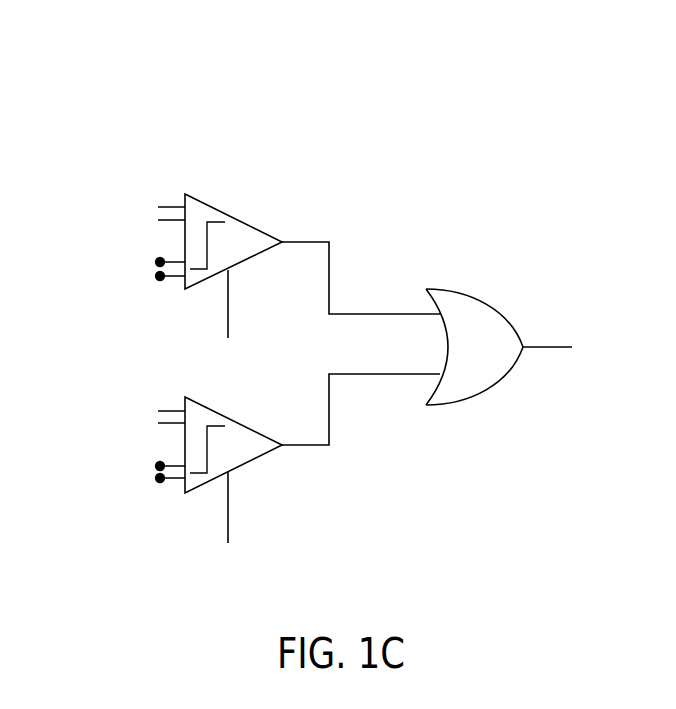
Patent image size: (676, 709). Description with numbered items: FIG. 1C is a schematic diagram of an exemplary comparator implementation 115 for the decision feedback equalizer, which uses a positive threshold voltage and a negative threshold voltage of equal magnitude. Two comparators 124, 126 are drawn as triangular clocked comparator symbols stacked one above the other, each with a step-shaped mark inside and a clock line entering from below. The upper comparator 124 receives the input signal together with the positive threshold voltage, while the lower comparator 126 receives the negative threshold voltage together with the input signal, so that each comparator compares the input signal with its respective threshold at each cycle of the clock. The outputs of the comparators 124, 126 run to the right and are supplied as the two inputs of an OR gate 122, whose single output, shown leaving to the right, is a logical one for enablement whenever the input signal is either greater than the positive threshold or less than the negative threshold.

The comparator circuit 115 is at (86, 97).
The OR gate 122 is at (492, 305).
The comparator 124 is at (249, 222).
The comparator 126 is at (253, 463).